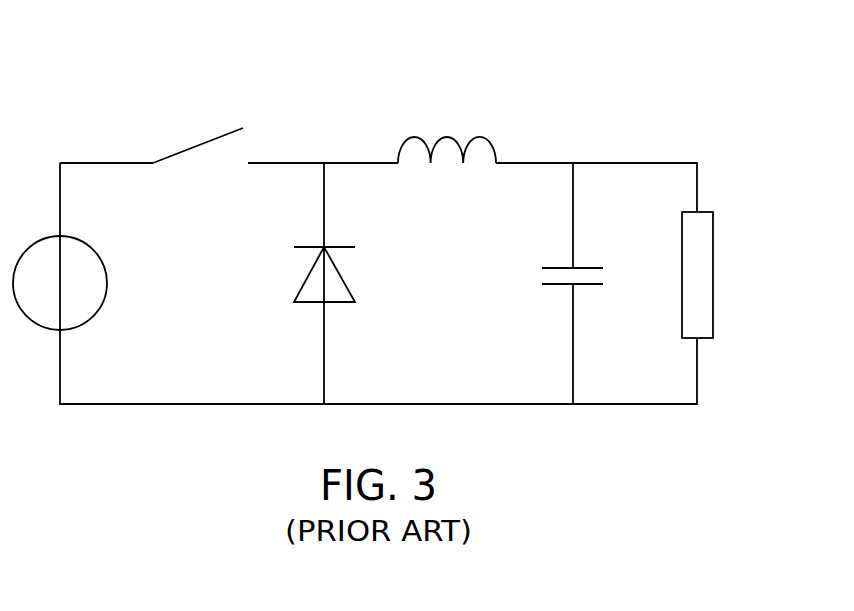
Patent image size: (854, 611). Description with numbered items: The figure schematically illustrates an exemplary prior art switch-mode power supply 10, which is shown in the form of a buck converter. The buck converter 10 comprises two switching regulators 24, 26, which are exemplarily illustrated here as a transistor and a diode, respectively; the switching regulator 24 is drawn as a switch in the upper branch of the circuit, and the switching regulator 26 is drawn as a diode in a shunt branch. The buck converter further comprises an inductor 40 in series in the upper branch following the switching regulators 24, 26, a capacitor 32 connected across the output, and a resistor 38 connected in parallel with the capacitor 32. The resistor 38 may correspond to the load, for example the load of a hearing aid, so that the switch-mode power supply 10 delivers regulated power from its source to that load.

The switch-mode power supply 10 is at (118, 69).
The switching regulator 24 is at (204, 143).
The switching regulator 26 is at (303, 283).
The capacitor 32 is at (540, 276).
The resistor 38 is at (714, 235).
The inductor 40 is at (447, 137).